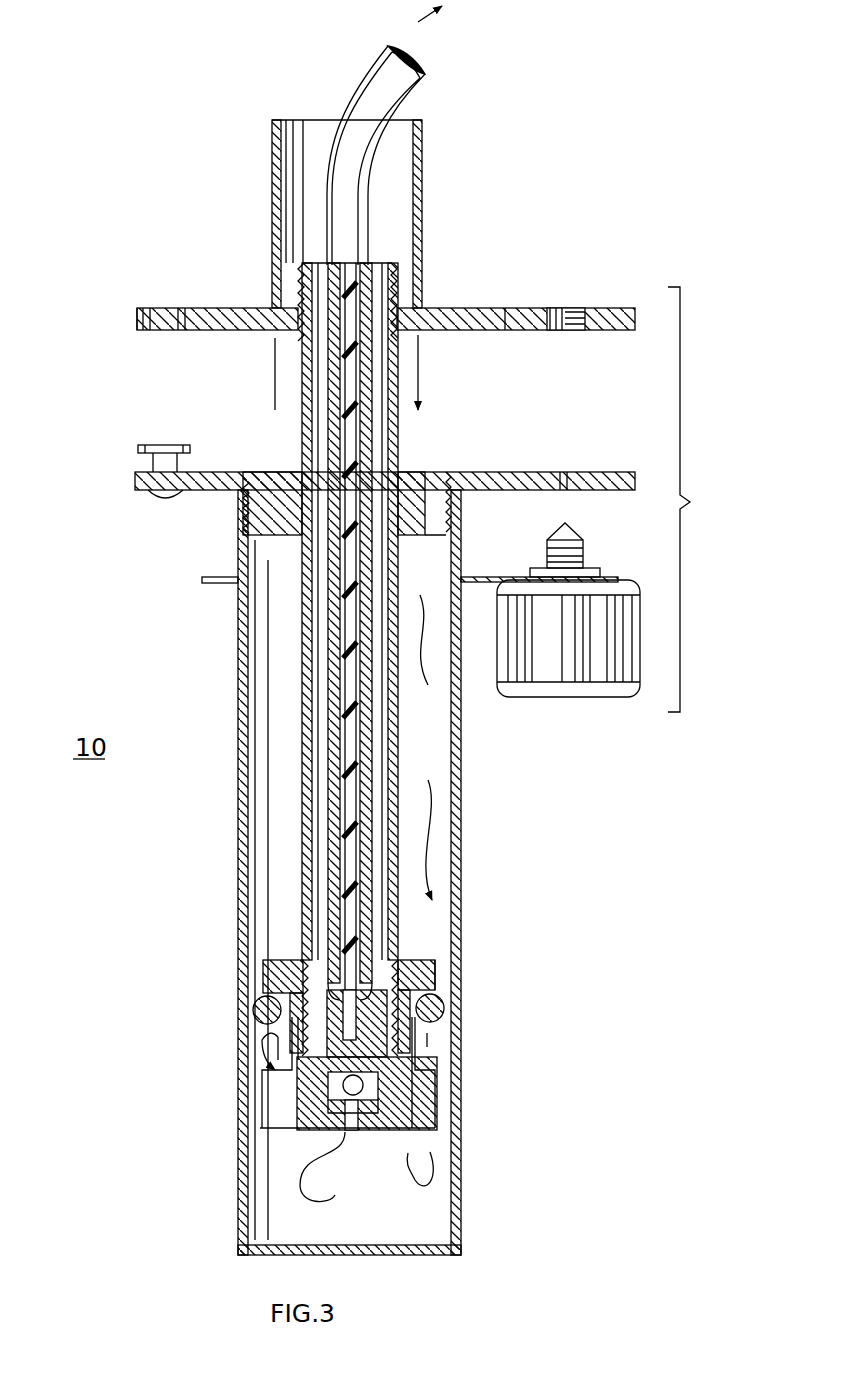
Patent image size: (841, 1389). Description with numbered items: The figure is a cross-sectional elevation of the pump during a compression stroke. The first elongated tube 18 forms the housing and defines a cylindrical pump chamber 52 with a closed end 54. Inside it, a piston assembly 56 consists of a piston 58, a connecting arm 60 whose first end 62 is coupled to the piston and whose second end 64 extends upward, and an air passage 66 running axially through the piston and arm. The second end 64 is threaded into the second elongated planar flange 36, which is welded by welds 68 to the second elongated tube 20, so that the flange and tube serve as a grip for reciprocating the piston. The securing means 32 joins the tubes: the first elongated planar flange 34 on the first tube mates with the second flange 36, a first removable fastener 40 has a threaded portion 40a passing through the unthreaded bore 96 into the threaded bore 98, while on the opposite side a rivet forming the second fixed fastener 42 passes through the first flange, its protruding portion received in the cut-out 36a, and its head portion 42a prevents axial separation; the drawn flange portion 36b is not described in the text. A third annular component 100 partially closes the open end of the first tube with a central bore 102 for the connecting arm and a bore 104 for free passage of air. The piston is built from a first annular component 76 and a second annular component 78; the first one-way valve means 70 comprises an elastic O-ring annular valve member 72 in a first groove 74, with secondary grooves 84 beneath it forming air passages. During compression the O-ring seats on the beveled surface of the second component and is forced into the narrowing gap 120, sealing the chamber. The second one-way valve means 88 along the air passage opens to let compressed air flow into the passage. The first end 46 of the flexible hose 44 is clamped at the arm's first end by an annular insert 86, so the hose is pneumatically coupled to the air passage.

The first elongated tube 18 is at (238, 878).
The second elongated tube 20 is at (422, 175).
The means for releasably fixedly securing the tubes 32 is at (695, 499).
The first elongated planar flange 34 is at (488, 468).
The second elongated planar flange 36 is at (470, 330).
The cut-out 36a is at (163, 308).
The right flange portion 36b is at (507, 308).
The first removable fastener 40 is at (636, 586).
The threaded portion of the fastener 40a is at (583, 556).
The second fixed fastener 42 is at (165, 497).
The head portion of the rivet 42a is at (165, 445).
The flexible hose 44 is at (365, 78).
The first end of the flexible hose 46 is at (307, 1060).
The cylindrical pump chamber 52 is at (372, 1203).
The closed end of the chamber 54 is at (280, 1238).
The piston assembly 56 is at (435, 953).
The piston 58 is at (298, 945).
The connecting arm 60 is at (402, 725).
The first end of the connecting arm 62 is at (272, 952).
The second end of the connecting arm 64 is at (400, 292).
The air passage 66 is at (400, 988).
The welds 68 is at (290, 305).
The first one-way valve means 70 is at (262, 1030).
The annular valve member 72 is at (437, 1013).
The first groove 74 is at (442, 1068).
The first annular component 76 is at (300, 1142).
The second annular component 78 is at (280, 990).
The secondary grooves 84 is at (265, 1100).
The annular insert 86 is at (385, 1062).
The second one-way valve means 88 is at (366, 1086).
The unthreaded bore 96 is at (565, 474).
The threaded bore 98 is at (565, 308).
The third annular component 100 is at (272, 476).
The central bore 102 is at (400, 525).
The bore 104 is at (443, 522).
The narrowing gap 120 is at (443, 972).